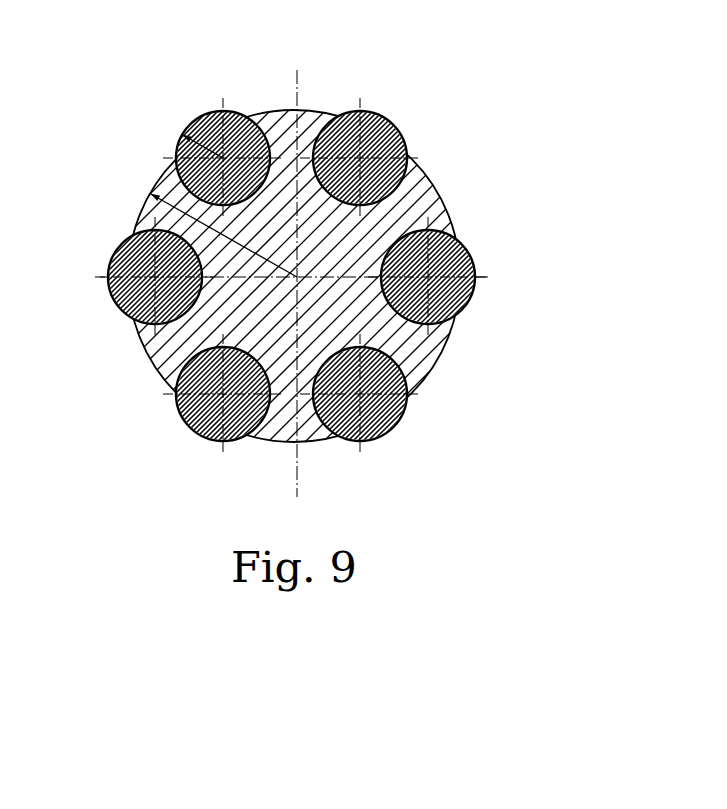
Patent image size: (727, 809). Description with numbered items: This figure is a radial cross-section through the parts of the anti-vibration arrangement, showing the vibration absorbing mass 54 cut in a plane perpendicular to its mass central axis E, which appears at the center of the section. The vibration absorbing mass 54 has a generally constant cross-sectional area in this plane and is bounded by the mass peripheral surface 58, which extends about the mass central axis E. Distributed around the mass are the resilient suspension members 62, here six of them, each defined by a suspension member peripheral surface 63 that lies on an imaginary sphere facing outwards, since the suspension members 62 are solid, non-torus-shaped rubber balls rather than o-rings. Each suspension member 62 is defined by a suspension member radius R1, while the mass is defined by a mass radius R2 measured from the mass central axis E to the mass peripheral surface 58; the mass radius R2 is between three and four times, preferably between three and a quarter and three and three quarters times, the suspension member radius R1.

The vibration absorbing mass 54 is at (435, 190).
The mass peripheral surface 58 is at (447, 218).
The resilient suspension members 62 is at (246, 115).
The suspension member peripheral surface 63 is at (473, 293).
The mass central axis E is at (297, 277).
The suspension member radius R1 is at (185, 134).
The mass radius R2 is at (183, 212).